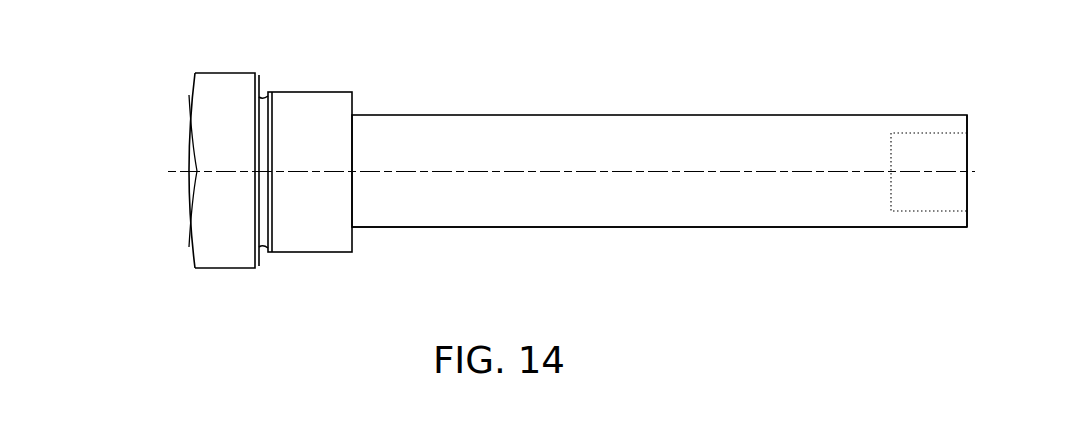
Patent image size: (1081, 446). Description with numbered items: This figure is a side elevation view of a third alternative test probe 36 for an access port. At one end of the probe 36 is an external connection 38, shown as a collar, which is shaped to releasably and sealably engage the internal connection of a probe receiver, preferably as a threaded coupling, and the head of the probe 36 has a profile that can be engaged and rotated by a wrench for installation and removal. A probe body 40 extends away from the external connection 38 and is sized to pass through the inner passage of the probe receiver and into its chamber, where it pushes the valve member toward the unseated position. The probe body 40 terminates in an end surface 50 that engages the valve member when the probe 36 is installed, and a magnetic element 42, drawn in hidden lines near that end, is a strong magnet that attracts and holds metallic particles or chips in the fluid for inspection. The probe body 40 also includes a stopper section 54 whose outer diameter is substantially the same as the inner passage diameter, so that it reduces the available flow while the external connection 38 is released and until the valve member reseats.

The probe 36 is at (185, 317).
The external connection 38 is at (330, 107).
The probe body 40 is at (857, 213).
The magnetic element 42 is at (942, 192).
The end surface 50 is at (966, 178).
The stopper section 54 is at (793, 207).